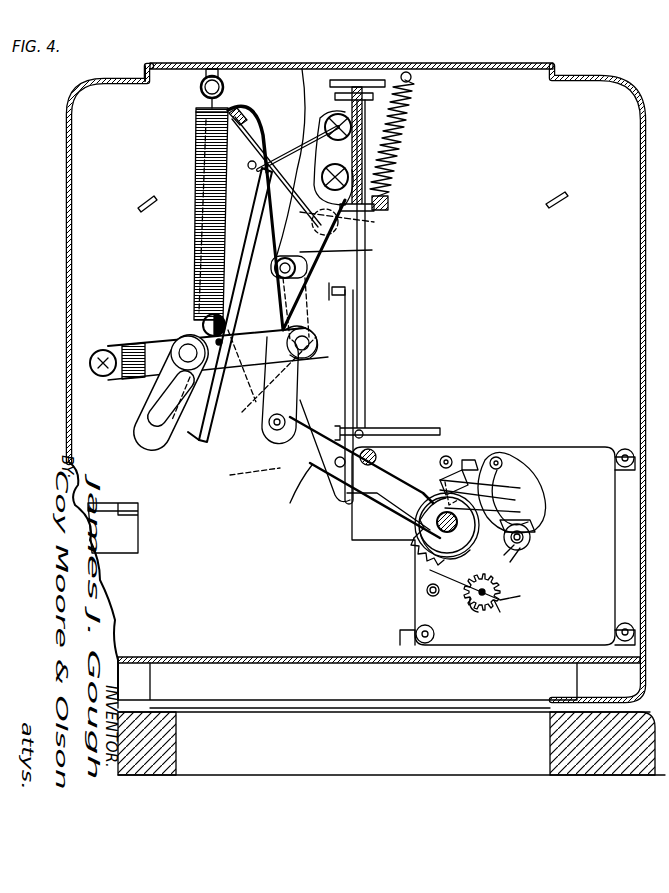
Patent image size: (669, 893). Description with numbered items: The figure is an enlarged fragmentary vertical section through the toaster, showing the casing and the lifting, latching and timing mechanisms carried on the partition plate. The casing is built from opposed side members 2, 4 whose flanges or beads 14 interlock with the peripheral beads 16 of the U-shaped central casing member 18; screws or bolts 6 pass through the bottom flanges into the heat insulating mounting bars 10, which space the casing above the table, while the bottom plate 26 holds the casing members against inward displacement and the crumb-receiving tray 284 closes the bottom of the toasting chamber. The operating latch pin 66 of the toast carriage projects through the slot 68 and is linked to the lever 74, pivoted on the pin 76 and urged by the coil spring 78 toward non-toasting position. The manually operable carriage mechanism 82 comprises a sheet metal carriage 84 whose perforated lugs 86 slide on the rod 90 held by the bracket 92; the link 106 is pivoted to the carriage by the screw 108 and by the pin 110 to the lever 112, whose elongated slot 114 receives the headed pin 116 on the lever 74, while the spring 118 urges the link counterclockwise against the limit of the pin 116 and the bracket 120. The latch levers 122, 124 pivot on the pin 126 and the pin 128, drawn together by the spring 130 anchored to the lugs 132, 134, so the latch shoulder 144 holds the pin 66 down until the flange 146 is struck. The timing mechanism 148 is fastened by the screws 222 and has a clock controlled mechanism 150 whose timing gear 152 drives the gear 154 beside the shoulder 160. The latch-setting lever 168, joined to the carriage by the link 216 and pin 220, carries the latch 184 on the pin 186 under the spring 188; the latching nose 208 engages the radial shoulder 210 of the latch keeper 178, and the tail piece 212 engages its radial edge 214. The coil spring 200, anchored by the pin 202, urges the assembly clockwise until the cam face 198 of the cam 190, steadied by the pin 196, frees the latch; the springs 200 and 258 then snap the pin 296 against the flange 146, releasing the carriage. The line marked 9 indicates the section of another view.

The side member 2 is at (641, 106).
The side member 4 is at (66, 162).
The screws or bolts 6 is at (638, 282).
The section line 9 is at (417, 452).
The mounting bars 10 is at (160, 752).
The upstanding flanges or beads 14 is at (185, 64).
The inturned peripheral flanges or beads 16 is at (146, 66).
The central casing member 18 is at (545, 61).
The bottom plate 26 is at (310, 657).
The operating latch pin 66 is at (287, 258).
The slot or opening 68 is at (255, 398).
The lever 74 is at (140, 360).
The pin or screw 76 is at (104, 350).
The coil spring 78 is at (196, 150).
The carriage mechanism 82 is at (327, 80).
The sheet metal carriage 84 is at (388, 136).
The perforated lug 86 is at (408, 72).
The rod 90 is at (366, 333).
The lug or bracket 92 is at (402, 74).
The link 106 is at (192, 448).
The screw 108 is at (357, 87).
The pin or screw 110 is at (208, 316).
The link or lever 112 is at (150, 436).
The elongated slot 114 is at (158, 414).
The headed pin 116 is at (180, 346).
The spring 118 is at (305, 72).
The lug or bracket 120 is at (140, 516).
The latch lever 122 is at (254, 442).
The latch lever 124 is at (340, 366).
The pin 126 is at (196, 234).
The pin or screw 128 is at (376, 223).
The spring 130 is at (330, 173).
The lug 132 is at (250, 122).
The lug 134 is at (347, 292).
The latch shoulder 144 is at (267, 378).
The lug or flange 146 is at (320, 490).
The timing mechanism 148 is at (507, 440).
The clock controlled mechanism 150 is at (540, 662).
The timing gear 152 is at (472, 604).
The gear 154 is at (418, 562).
The shoulder 160 is at (517, 500).
The latch-setting lever 168 is at (358, 497).
The latch keeper 178 is at (415, 532).
The latch 184 is at (510, 470).
The pin 186 is at (522, 552).
The spring 188 is at (534, 535).
The cam 190 is at (467, 458).
The pin 196 is at (446, 456).
The cam face 198 is at (460, 470).
The coil spring 200 is at (420, 540).
The pin 202 is at (377, 493).
The latching nose 208 is at (522, 488).
The radial shoulder 210 is at (407, 456).
The tail piece 212 is at (520, 580).
The radial edge 214 is at (522, 513).
The link 216 is at (368, 250).
The pin or screw 220 is at (374, 182).
The screws or bolts 222 is at (625, 448).
The coil spring 258 is at (400, 150).
The crumb-receiving tray 284 is at (335, 712).
The pin 296 is at (360, 460).